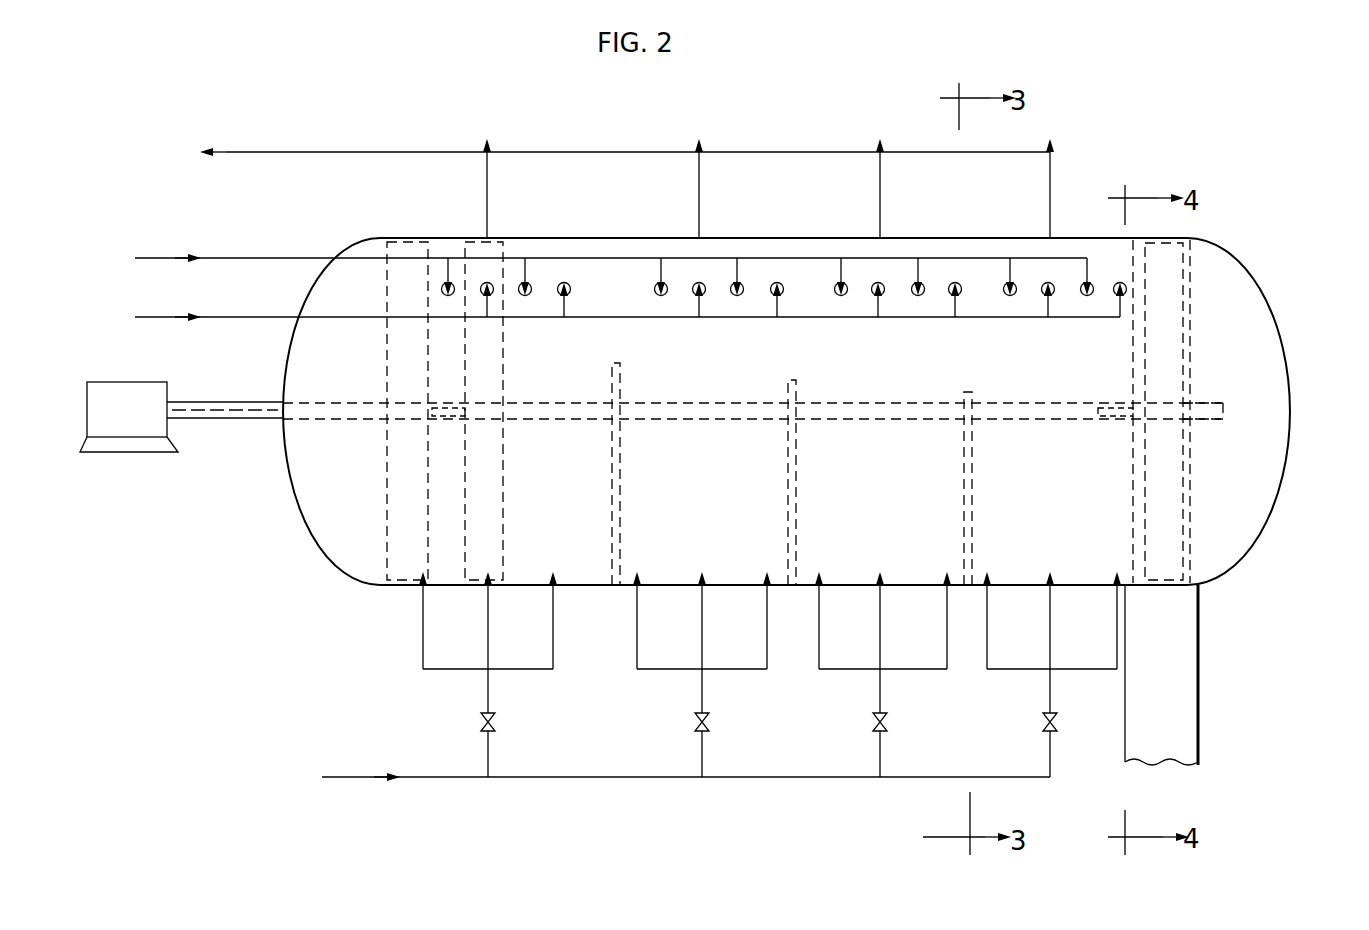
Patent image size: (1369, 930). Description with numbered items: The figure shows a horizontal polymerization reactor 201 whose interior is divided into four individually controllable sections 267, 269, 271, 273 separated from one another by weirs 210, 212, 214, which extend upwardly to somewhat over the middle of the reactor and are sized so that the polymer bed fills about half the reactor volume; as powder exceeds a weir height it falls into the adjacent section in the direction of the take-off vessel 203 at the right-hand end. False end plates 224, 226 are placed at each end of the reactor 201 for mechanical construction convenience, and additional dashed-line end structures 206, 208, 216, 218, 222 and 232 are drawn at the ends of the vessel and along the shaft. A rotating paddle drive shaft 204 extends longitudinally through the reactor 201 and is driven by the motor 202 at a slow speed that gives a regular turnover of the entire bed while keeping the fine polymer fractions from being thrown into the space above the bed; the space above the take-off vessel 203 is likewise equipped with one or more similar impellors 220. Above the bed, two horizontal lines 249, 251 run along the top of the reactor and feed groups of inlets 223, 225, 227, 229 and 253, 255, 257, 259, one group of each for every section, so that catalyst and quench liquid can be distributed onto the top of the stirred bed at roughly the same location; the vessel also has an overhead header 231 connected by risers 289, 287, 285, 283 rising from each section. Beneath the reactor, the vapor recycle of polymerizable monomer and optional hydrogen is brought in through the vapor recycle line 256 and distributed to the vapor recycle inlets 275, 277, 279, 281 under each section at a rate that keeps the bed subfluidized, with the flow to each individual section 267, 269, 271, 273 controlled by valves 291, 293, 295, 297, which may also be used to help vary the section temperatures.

The reactor 201 is at (1100, 545).
The motor 202 is at (140, 382).
The take-off vessel 203 is at (1185, 758).
The rotating paddle drive shaft 204 is at (247, 402).
The end partition 206 is at (398, 540).
The second partition 208 is at (445, 420).
The weir 210 is at (616, 513).
The weir 212 is at (790, 510).
The weir 214 is at (968, 510).
The partition 216 is at (1140, 352).
The end partition 218 is at (1137, 292).
The impellor 220 is at (1165, 485).
The agitator 222 is at (490, 393).
The false end plate 224 is at (1190, 516).
The false end plate 226 is at (390, 437).
The nozzle group 229 is at (1085, 283).
The nozzle group 227 is at (915, 283).
The nozzle group 225 is at (735, 282).
The nozzle group 223 is at (522, 283).
The vent header 231 is at (603, 152).
The shaft bearing 232 is at (1112, 405).
The feed line 249 is at (278, 258).
The return line 251 is at (254, 317).
The nozzle group 253 is at (565, 296).
The nozzle group 255 is at (778, 296).
The nozzle group 257 is at (955, 296).
The nozzle group 259 is at (1120, 296).
The vapor recycle line 256 is at (392, 780).
The reactor section 267 is at (566, 490).
The reactor section 269 is at (711, 490).
The reactor section 271 is at (885, 490).
The reactor section 273 is at (1061, 490).
The vapor recycle inlet 275 is at (488, 645).
The vapor recycle inlet 277 is at (702, 645).
The vapor recycle inlet 279 is at (880, 645).
The vapor recycle inlet 281 is at (1050, 645).
The vent riser 283 is at (1052, 238).
The vent riser 285 is at (881, 238).
The vent riser 287 is at (700, 238).
The vent riser 289 is at (488, 238).
The valve 291 is at (496, 725).
The valve 293 is at (710, 725).
The valve 295 is at (888, 725).
The valve 297 is at (1058, 725).